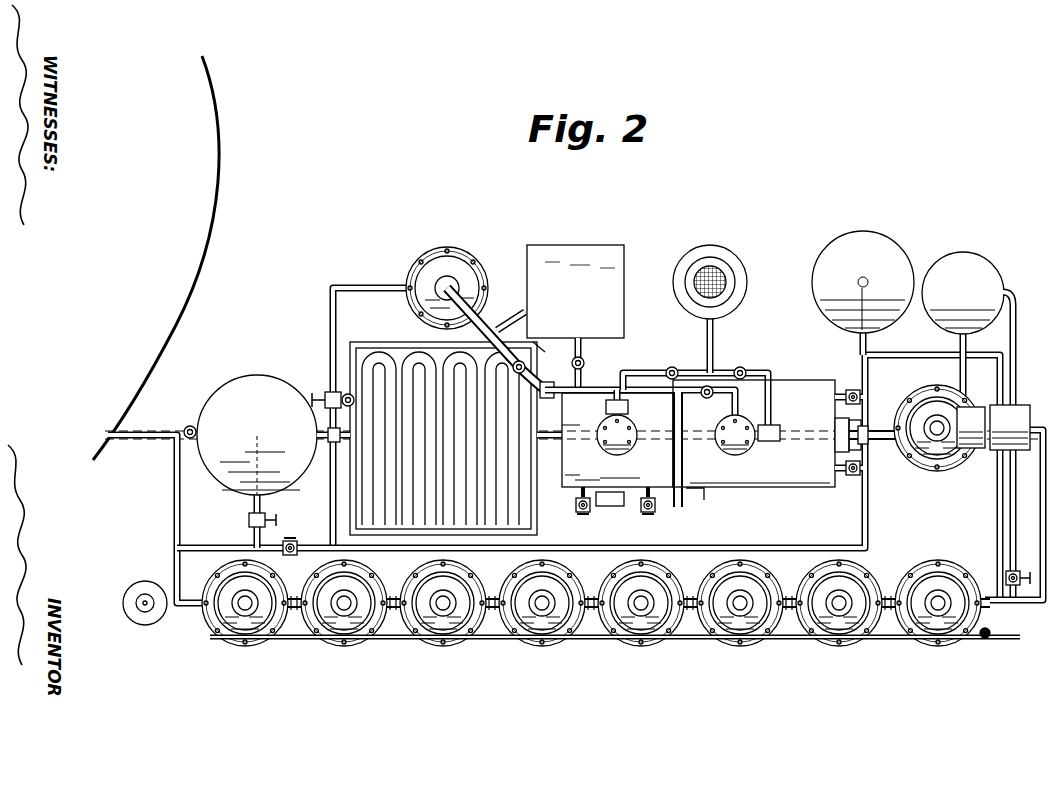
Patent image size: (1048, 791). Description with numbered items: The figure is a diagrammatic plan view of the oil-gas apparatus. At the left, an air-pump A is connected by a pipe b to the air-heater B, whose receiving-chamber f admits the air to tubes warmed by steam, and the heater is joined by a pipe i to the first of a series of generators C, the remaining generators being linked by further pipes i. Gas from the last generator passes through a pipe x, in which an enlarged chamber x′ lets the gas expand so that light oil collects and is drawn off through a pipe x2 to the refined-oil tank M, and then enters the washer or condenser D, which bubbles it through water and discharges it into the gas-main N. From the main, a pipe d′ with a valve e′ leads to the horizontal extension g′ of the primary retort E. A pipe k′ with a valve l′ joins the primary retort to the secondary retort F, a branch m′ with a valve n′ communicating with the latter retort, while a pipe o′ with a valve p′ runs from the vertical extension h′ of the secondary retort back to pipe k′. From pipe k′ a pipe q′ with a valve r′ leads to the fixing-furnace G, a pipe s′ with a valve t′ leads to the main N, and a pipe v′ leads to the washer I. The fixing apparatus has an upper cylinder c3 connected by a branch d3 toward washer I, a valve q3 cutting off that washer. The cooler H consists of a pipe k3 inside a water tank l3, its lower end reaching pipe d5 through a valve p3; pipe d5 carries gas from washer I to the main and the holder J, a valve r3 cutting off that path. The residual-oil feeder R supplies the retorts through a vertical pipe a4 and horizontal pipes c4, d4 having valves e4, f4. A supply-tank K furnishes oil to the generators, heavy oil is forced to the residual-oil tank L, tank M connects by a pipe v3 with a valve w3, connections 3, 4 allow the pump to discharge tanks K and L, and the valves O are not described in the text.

The holder J is at (160, 258).
The gas-main N is at (920, 474).
The cooler or condenser H is at (443, 428).
The pipe d5 is at (370, 406).
The tank l3 is at (537, 518).
The connection 3 is at (278, 530).
The supply-tank K is at (257, 435).
The valve p3 is at (324, 394).
The valve r3 is at (340, 398).
The cylinder c3 is at (352, 345).
The washer I is at (447, 278).
The pipe v′ is at (492, 330).
The branch d3 is at (520, 320).
The fixing-furnace G is at (575, 291).
The valve q3 is at (538, 345).
The valve r′ is at (586, 364).
The valve t′ is at (548, 377).
The pipe q′ is at (616, 362).
The pipe k′ is at (624, 380).
The horizontal pipe c4 is at (660, 372).
The valve e4 is at (680, 364).
The vertical pipe a4 is at (714, 338).
The valve l′ is at (722, 372).
The valve f4 is at (747, 362).
The residual-oil feeder R is at (710, 274).
The secondary retort F is at (617, 440).
The primary retort E is at (754, 433).
The valve p′ is at (604, 412).
The pipe o′ is at (625, 430).
The pipe s′ is at (571, 441).
The vertical extension h′ is at (648, 452).
The horizontal pipe d4 is at (720, 430).
The branch m′ is at (717, 466).
The receiving-chamber f is at (752, 447).
The pipe k3 is at (563, 474).
The valve n′ is at (693, 505).
The valves O is at (860, 397).
The connection 4 is at (866, 505).
The pipe d′ is at (836, 430).
The horizontal extension g′ is at (842, 445).
The valve e′ is at (872, 428).
The residual-oil tank L is at (887, 319).
The refined-oil tank M is at (963, 293).
The pipe v3 is at (1020, 446).
The pipe x is at (1014, 530).
The washer or condenser D is at (918, 455).
The pipe x2 is at (973, 405).
The enlarged chamber x′ is at (1000, 452).
The valve w3 is at (1006, 576).
The pipe b is at (578, 623).
The air-pump A is at (138, 592).
The air-heater B is at (258, 645).
The generators C is at (641, 614).
The pipe i is at (294, 597).